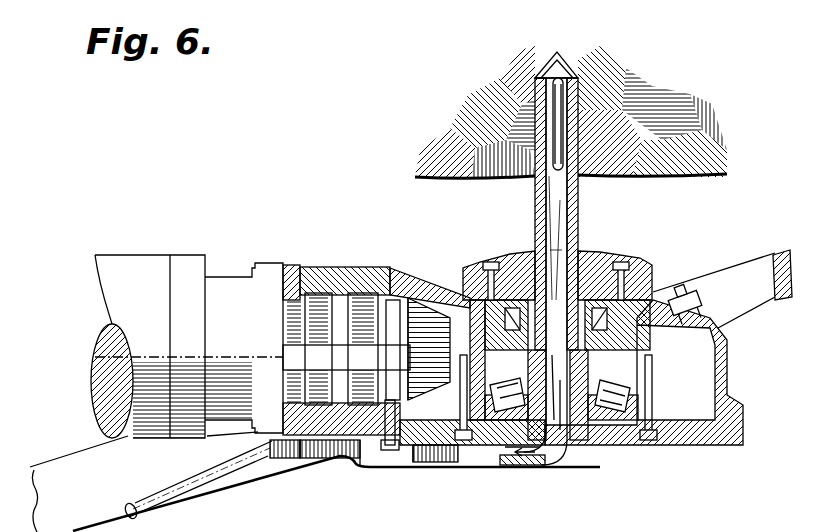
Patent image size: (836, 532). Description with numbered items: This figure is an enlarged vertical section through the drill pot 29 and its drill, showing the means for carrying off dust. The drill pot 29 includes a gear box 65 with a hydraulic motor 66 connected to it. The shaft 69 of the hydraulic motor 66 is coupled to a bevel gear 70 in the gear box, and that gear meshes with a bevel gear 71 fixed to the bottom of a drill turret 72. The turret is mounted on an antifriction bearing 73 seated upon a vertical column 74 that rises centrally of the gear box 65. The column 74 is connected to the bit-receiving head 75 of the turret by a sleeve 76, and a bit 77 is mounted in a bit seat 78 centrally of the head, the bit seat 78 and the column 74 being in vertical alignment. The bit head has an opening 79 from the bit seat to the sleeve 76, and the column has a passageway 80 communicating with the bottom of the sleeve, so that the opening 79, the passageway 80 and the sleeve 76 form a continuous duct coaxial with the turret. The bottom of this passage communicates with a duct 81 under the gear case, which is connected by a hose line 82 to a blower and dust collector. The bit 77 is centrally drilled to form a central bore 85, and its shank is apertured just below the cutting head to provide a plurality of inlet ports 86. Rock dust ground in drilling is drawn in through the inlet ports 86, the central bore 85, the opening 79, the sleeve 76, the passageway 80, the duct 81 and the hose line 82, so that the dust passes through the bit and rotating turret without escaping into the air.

The drill pot 29 is at (460, 250).
The gear box 65 is at (430, 298).
The hydraulic motor 66 is at (193, 272).
The shaft 69 is at (283, 346).
The bevel gear 70 is at (435, 305).
The bevel gear 71 is at (441, 422).
The drill turret 72 is at (690, 297).
The antifriction bearing 73 is at (588, 448).
The vertical column 74 is at (541, 426).
The bit-receiving head 75 is at (613, 232).
The sleeve 76 is at (613, 252).
The bit 77 is at (537, 214).
The bit seat 78 is at (550, 258).
The opening 79 is at (572, 258).
The passageway 80 is at (568, 450).
The duct 81 is at (478, 456).
The hose line 82 is at (183, 497).
The central bore 85 is at (578, 193).
The inlet ports 86 is at (560, 118).